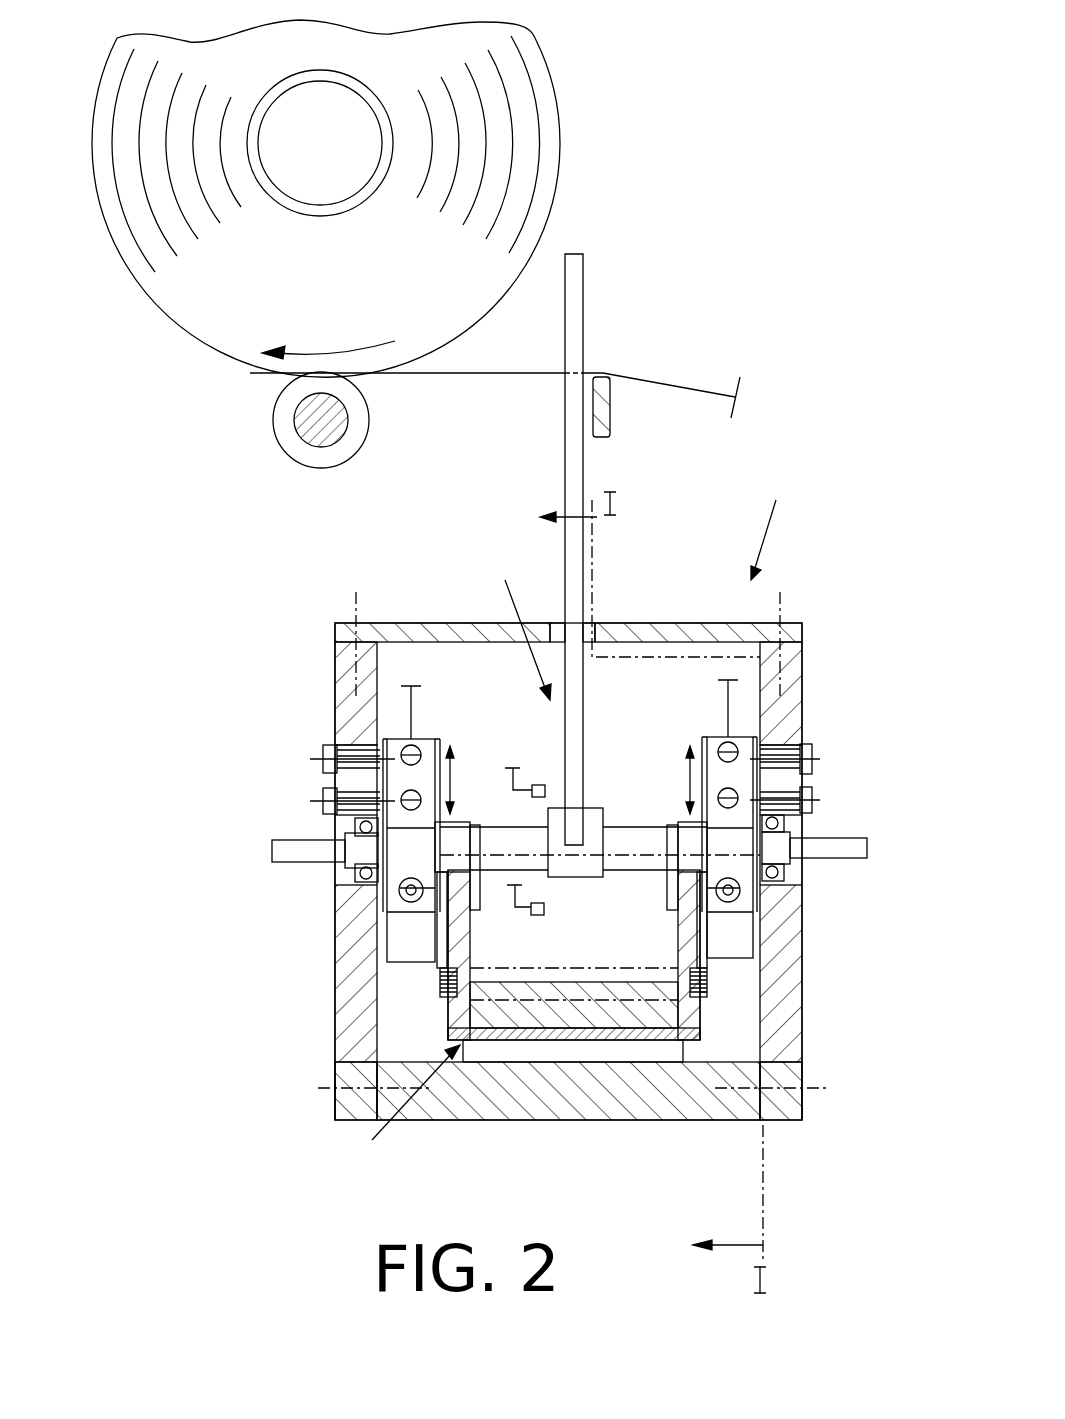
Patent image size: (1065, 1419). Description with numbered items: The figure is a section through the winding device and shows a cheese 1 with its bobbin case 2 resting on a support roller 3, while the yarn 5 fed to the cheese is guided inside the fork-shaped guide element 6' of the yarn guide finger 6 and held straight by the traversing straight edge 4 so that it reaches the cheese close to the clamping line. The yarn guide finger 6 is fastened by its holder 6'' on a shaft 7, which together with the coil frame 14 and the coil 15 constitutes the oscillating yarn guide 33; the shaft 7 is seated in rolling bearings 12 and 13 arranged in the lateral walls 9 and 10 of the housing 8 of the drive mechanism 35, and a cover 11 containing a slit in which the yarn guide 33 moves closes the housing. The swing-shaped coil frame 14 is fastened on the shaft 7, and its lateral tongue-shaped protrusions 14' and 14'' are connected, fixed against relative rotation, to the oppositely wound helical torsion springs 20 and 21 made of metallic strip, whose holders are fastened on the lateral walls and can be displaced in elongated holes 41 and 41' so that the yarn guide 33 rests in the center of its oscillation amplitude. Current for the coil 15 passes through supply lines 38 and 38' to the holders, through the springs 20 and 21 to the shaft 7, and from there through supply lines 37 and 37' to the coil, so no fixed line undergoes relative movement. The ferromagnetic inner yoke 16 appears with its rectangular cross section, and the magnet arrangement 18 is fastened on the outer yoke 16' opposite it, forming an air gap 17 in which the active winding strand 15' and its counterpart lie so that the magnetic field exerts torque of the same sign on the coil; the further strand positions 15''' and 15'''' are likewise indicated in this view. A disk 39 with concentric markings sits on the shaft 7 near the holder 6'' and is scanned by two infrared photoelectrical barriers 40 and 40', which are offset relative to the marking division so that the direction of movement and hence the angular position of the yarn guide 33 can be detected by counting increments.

The cheese 1 is at (515, 165).
The bobbin case 2 is at (385, 115).
The support roller 3 is at (347, 445).
The traversing straight edge 4 is at (610, 412).
The yarn 5 is at (693, 388).
The yarn guide finger 6 is at (624, 515).
The fork-shaped guide element 6' is at (622, 313).
The holder 6'' is at (596, 743).
The shaft 7 is at (630, 828).
The housing 8 is at (816, 610).
The lateral wall 9 is at (785, 708).
The lateral wall 10 is at (355, 718).
The cover 11 is at (650, 628).
The rolling bearing 12 is at (790, 806).
The rolling bearing 13 is at (363, 878).
The coil frame 14 is at (647, 963).
The tongue-shaped protrusion 14' is at (669, 955).
The tongue-shaped protrusion 14'' is at (484, 955).
The coil 15 is at (769, 974).
The winding strand 15' is at (574, 898).
The stud end 15''' is at (786, 1002).
The left threaded stud 15'''' is at (418, 1014).
The inner yoke 16 is at (612, 999).
The outer yoke 16' is at (568, 1119).
The air gap 17 is at (405, 1109).
The magnet arrangement 18 is at (667, 1050).
The helical spring 20 is at (745, 922).
The helical spring 21 is at (407, 950).
The yarn guide 33 is at (516, 622).
The drive mechanism 35 is at (777, 526).
The supply line 37 is at (356, 853).
The supply line 37' is at (775, 852).
The supply line 38 is at (437, 707).
The supply line 38' is at (696, 706).
The disk 39 is at (546, 896).
The infrared photoelectrical barrier 40 is at (530, 763).
The infrared photoelectrical barrier 40' is at (549, 932).
The elongated hole 41 is at (812, 775).
The elongated hole 41' is at (319, 779).